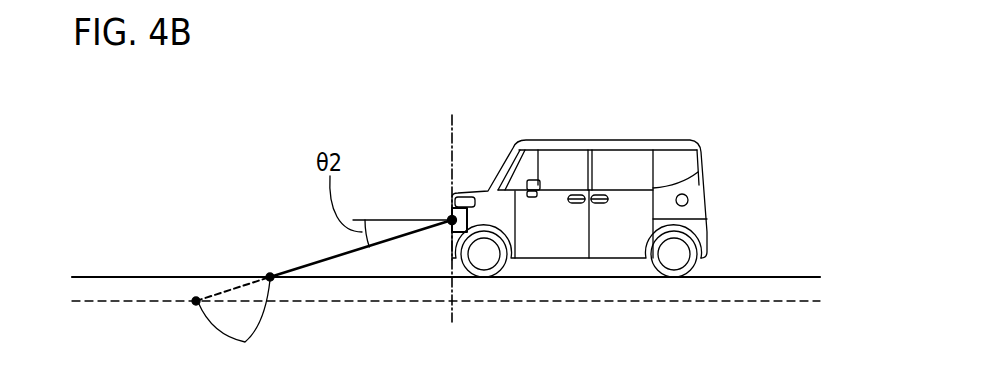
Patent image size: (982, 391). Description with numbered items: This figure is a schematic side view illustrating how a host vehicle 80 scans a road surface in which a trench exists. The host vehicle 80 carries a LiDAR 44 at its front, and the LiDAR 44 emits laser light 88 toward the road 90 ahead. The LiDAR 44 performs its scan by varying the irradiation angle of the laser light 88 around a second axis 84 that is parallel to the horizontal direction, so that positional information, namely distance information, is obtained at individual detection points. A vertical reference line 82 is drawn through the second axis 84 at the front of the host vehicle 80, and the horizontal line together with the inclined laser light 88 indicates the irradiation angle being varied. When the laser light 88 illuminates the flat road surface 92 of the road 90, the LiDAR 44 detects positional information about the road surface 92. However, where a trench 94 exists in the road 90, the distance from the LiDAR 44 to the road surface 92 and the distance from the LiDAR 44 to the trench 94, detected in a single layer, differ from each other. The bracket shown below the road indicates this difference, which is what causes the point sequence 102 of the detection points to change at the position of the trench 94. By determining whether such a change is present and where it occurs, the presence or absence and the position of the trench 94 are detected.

The LiDAR 44 is at (470, 222).
The host vehicle 80 is at (628, 140).
The reference line 82 is at (447, 135).
The second axis 84 is at (452, 220).
The laser light 88 is at (327, 257).
The road 90 is at (133, 225).
The road surface 92 is at (167, 277).
The trench 94 is at (130, 301).
The point sequence 102 is at (234, 326).